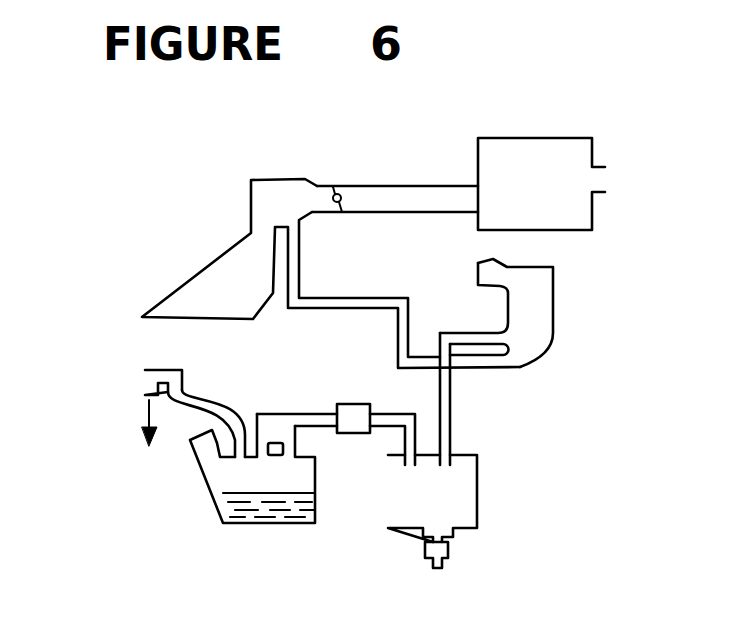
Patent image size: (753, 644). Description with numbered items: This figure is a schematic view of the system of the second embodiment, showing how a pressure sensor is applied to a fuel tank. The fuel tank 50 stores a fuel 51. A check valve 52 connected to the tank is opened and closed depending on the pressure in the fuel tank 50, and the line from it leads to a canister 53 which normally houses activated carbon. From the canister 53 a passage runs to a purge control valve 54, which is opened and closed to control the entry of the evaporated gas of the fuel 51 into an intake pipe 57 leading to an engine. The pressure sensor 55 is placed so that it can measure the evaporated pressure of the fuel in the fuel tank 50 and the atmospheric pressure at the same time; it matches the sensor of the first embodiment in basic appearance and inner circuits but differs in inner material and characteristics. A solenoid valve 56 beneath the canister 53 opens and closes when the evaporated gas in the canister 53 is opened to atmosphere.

The fuel tank 50 is at (208, 473).
The fuel 51 is at (260, 510).
The check valve 52 is at (353, 427).
The canister 53 is at (463, 493).
The purge control valve 54 is at (535, 320).
The pressure sensor 55 is at (152, 370).
The solenoid valve 56 is at (450, 550).
The intake pipe 57 is at (393, 202).